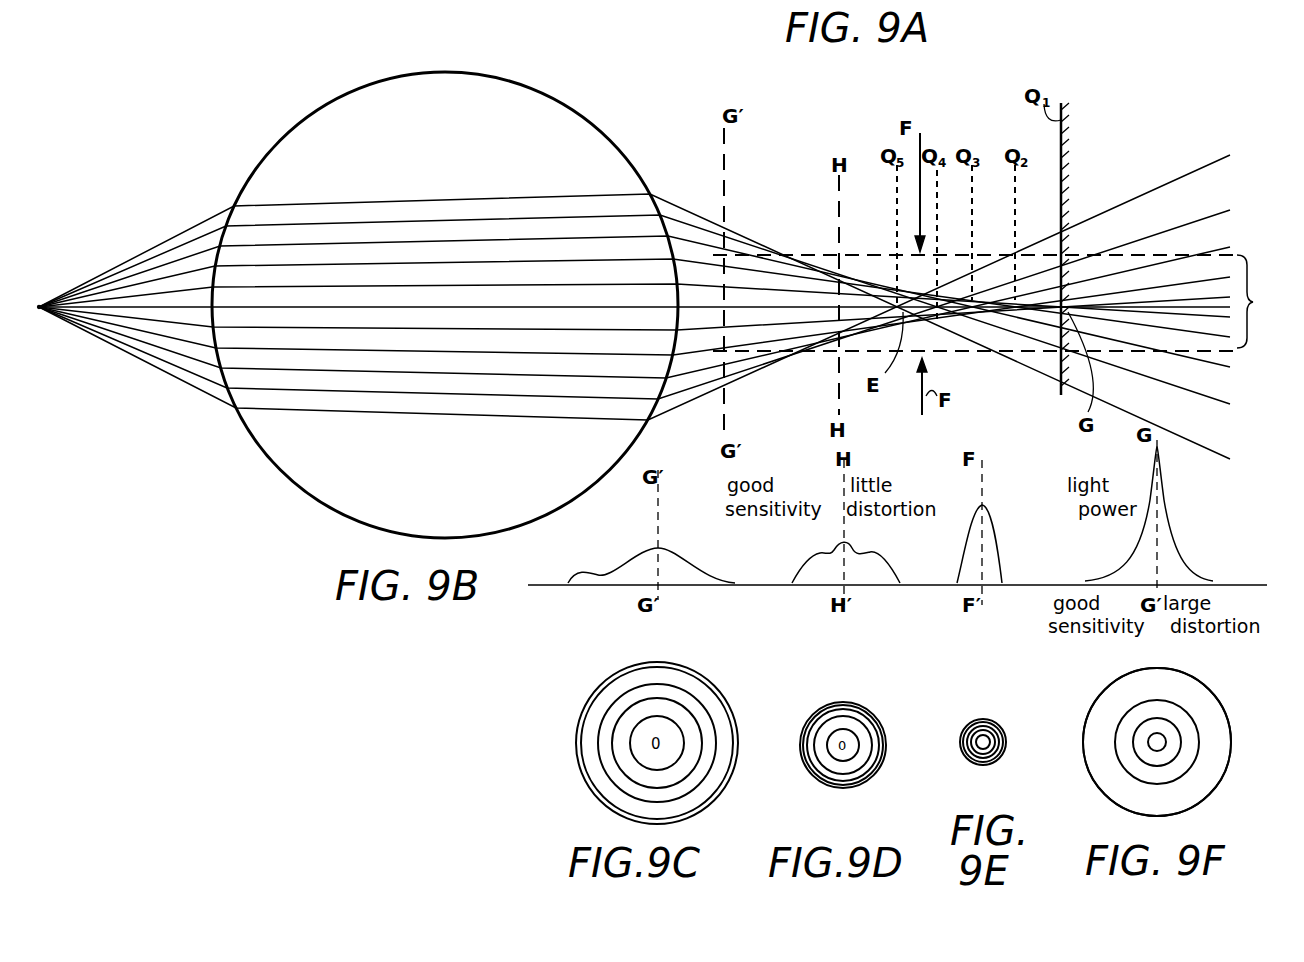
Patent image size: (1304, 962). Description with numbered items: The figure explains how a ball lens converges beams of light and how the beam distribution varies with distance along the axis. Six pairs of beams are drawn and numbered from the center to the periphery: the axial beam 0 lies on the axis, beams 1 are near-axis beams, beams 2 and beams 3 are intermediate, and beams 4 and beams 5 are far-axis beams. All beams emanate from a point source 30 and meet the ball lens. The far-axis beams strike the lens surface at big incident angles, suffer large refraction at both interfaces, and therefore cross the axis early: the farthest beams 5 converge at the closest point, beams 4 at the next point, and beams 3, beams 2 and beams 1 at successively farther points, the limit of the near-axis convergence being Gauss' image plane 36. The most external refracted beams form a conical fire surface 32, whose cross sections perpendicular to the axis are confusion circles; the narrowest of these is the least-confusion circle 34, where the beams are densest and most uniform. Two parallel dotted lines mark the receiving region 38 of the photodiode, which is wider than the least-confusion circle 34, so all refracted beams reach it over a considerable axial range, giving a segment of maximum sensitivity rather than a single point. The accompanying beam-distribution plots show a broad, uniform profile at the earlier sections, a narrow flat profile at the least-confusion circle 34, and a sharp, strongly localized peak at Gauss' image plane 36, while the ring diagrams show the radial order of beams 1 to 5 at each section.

In FIG. 9A, the point source 30 is at (39, 310).
In FIG. 9A, the fire surface 32 is at (672, 207).
In FIG. 9A, the least-confusion circle 34 is at (923, 135).
In FIG. 9A, the Gauss' image plane 36 is at (1062, 194).
In FIG. 9A, the receiving region 38 is at (1253, 302).
In FIG. 9A, the axial beam 0 is at (634, 296).
In FIG. 9A, the beams 1 is at (634, 297).
In FIG. 9C, the beams 1 is at (672, 720).
In FIG. 9D, the beams 1 is at (838, 730).
In FIG. 9E, the beams 1 is at (965, 748).
In FIG. 9F, the beams 1 is at (1160, 740).
In FIG. 9A, the beams 2 is at (634, 298).
In FIG. 9C, the beams 2 is at (655, 698).
In FIG. 9D, the beams 2 is at (862, 722).
In FIG. 9E, the beams 2 is at (972, 760).
In FIG. 9F, the beams 2 is at (1165, 727).
In FIG. 9A, the beams 3 is at (634, 299).
In FIG. 9C, the beams 3 is at (604, 782).
In FIG. 9D, the beams 3 is at (840, 780).
In FIG. 9E, the beams 3 is at (986, 765).
In FIG. 9F, the beams 3 is at (1180, 750).
In FIG. 9A, the beams 4 is at (634, 301).
In FIG. 9C, the beams 4 is at (581, 765).
In FIG. 9D, the beams 4 is at (810, 768).
In FIG. 9E, the beams 4 is at (995, 760).
In FIG. 9F, the beams 4 is at (1178, 780).
In FIG. 9A, the beams 5 is at (634, 307).
In FIG. 9C, the beams 5 is at (576, 743).
In FIG. 9D, the beams 5 is at (805, 745).
In FIG. 9E, the beams 5 is at (1000, 730).
In FIG. 9F, the beams 5 is at (1170, 818).